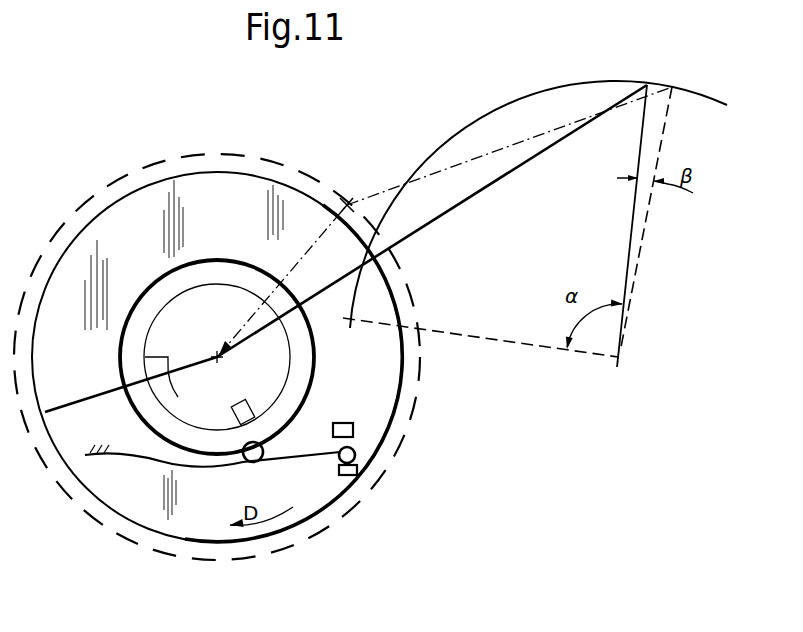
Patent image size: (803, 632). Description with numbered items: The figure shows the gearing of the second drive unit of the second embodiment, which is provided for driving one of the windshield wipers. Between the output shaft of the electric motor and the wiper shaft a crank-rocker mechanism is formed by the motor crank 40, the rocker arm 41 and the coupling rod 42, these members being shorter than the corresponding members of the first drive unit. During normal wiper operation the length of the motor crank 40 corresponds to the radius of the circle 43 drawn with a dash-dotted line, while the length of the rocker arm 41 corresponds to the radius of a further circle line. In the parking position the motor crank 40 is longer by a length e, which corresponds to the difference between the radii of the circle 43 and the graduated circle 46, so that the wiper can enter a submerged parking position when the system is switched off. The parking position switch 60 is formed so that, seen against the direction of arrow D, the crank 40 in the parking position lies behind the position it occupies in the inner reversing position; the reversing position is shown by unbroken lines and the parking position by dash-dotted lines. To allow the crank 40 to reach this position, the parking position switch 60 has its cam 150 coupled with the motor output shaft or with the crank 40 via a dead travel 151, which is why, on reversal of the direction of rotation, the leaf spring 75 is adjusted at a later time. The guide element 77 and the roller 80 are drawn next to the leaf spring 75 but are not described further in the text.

The graduated circle 46 is at (143, 163).
The circle 43 is at (120, 198).
The motor crank 40 is at (316, 292).
The dead travel 151 is at (180, 395).
The cam 150 is at (250, 440).
The coupling rod 42 is at (463, 203).
The rocker arm 41 is at (631, 245).
The guide element 77 is at (343, 422).
The leaf spring 75 is at (287, 460).
The roller 80 is at (353, 475).
The parking position switch 60 is at (197, 497).